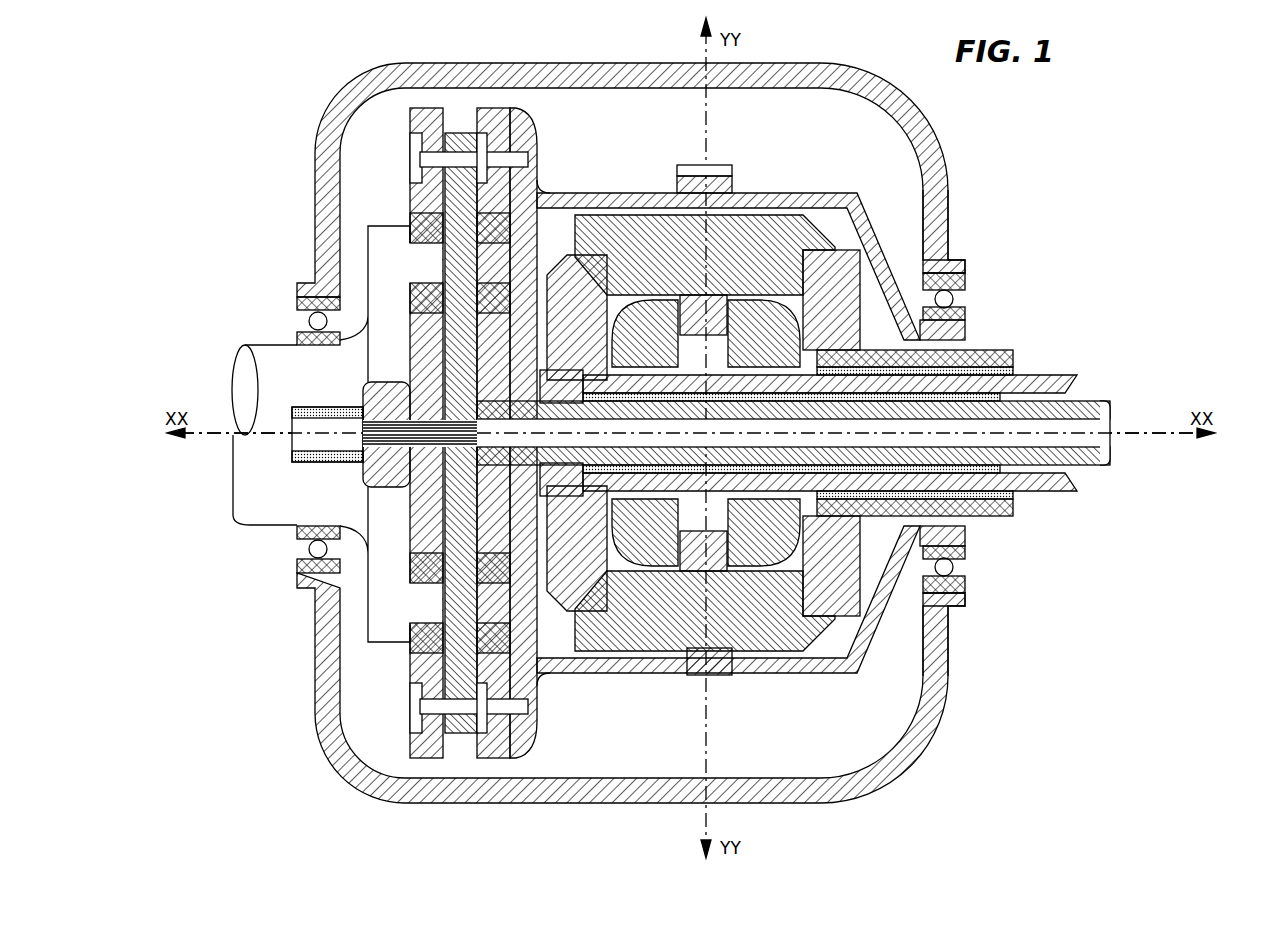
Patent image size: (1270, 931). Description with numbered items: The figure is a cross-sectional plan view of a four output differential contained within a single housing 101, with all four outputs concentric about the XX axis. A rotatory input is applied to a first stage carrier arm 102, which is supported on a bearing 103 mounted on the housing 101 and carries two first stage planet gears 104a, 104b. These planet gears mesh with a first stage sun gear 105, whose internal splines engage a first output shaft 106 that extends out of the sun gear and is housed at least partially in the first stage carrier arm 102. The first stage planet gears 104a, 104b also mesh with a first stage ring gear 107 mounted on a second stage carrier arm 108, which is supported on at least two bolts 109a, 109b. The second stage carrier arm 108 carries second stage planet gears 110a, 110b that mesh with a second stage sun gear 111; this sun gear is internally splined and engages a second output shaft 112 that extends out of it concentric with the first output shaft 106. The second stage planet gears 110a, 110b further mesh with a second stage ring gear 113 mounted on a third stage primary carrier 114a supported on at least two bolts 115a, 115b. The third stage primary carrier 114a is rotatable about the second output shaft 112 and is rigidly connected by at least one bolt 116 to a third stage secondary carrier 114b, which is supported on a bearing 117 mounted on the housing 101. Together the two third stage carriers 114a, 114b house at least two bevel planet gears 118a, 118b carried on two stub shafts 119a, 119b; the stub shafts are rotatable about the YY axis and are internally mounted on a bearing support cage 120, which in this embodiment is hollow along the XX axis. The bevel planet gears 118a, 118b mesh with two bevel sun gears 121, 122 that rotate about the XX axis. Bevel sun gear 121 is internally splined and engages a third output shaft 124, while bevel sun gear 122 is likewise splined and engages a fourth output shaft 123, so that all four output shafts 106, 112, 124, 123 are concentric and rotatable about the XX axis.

The housing 101 is at (318, 230).
The first stage carrier arm 102 is at (378, 270).
The bearing 103 is at (310, 321).
The first stage planet gear 104a is at (413, 632).
The first stage planet gear 104b is at (412, 225).
The first stage sun gear 105 is at (430, 545).
The first output shaft 106 is at (1115, 455).
The first stage ring gear 107 is at (413, 667).
The second stage carrier arm 108 is at (460, 730).
The bolt 109a is at (417, 708).
The bolt 109b is at (415, 153).
The second stage planet gear 110a is at (540, 665).
The second stage planet gear 110b is at (455, 150).
The second stage sun gear 111 is at (505, 525).
The second output shaft 112 is at (1085, 470).
The second stage ring gear 113 is at (538, 760).
The third stage primary carrier 114a is at (660, 673).
The third stage secondary carrier 114b is at (870, 673).
The bolt 115a is at (483, 735).
The bolt 115b is at (525, 150).
The bolt 116 is at (733, 178).
The bearing 117 is at (967, 555).
The bevel planet gear 118a is at (820, 660).
The bevel planet gear 118b is at (780, 235).
The stub shaft 119a is at (745, 575).
The stub shaft 119b is at (665, 300).
The bearing support cage 120 is at (840, 265).
The bevel sun gear 121 is at (563, 253).
The bevel sun gear 122 is at (945, 200).
The fourth output shaft 123 is at (1005, 355).
The third output shaft 124 is at (1070, 380).